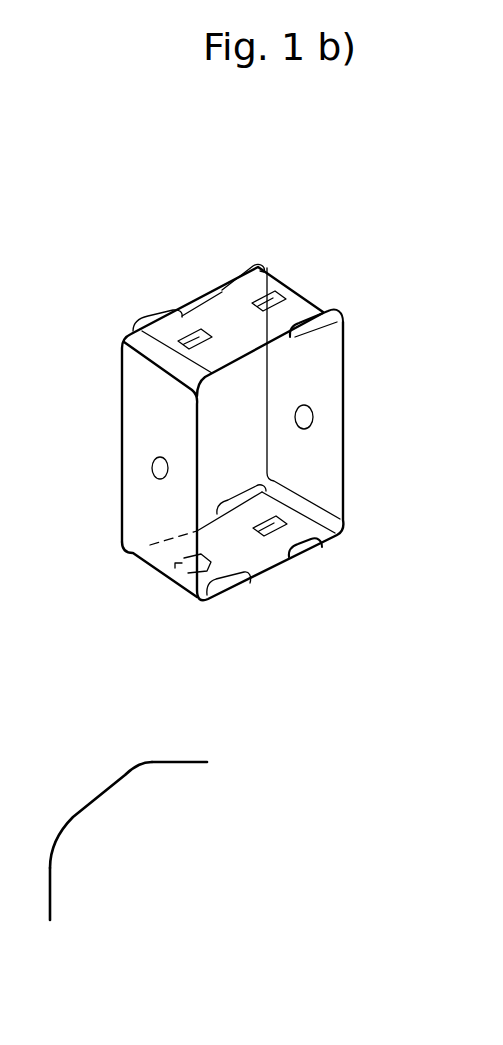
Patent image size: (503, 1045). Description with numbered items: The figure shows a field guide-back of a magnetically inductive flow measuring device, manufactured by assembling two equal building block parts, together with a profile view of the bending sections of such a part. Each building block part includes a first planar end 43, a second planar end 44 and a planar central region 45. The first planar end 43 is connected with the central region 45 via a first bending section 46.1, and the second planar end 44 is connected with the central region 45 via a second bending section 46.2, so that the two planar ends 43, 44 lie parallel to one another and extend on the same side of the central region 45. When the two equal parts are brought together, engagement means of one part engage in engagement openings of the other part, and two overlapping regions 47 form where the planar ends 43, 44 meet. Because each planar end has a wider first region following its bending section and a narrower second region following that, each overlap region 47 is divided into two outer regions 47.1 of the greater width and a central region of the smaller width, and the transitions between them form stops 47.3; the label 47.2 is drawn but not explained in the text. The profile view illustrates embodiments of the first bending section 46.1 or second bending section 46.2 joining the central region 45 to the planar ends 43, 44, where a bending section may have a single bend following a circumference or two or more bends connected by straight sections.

In FIG. 1c, the first planar end 43 is at (268, 741).
In FIG. 1c, the second planar end 44 is at (180, 759).
In FIG. 1b, the central region 45 is at (168, 468).
In FIG. 1c, the central region 45 is at (50, 902).
In FIG. 1c, the first bending section 46.1 is at (179, 820).
In FIG. 1c, the second bending section 46.2 is at (57, 857).
In FIG. 1b, the overlapping region 47 is at (218, 307).
In FIG. 1b, the outer region 47.1 is at (230, 368).
In FIG. 1b, the tab flange 47.2 is at (250, 353).
In FIG. 1b, the stop 47.3 is at (243, 353).